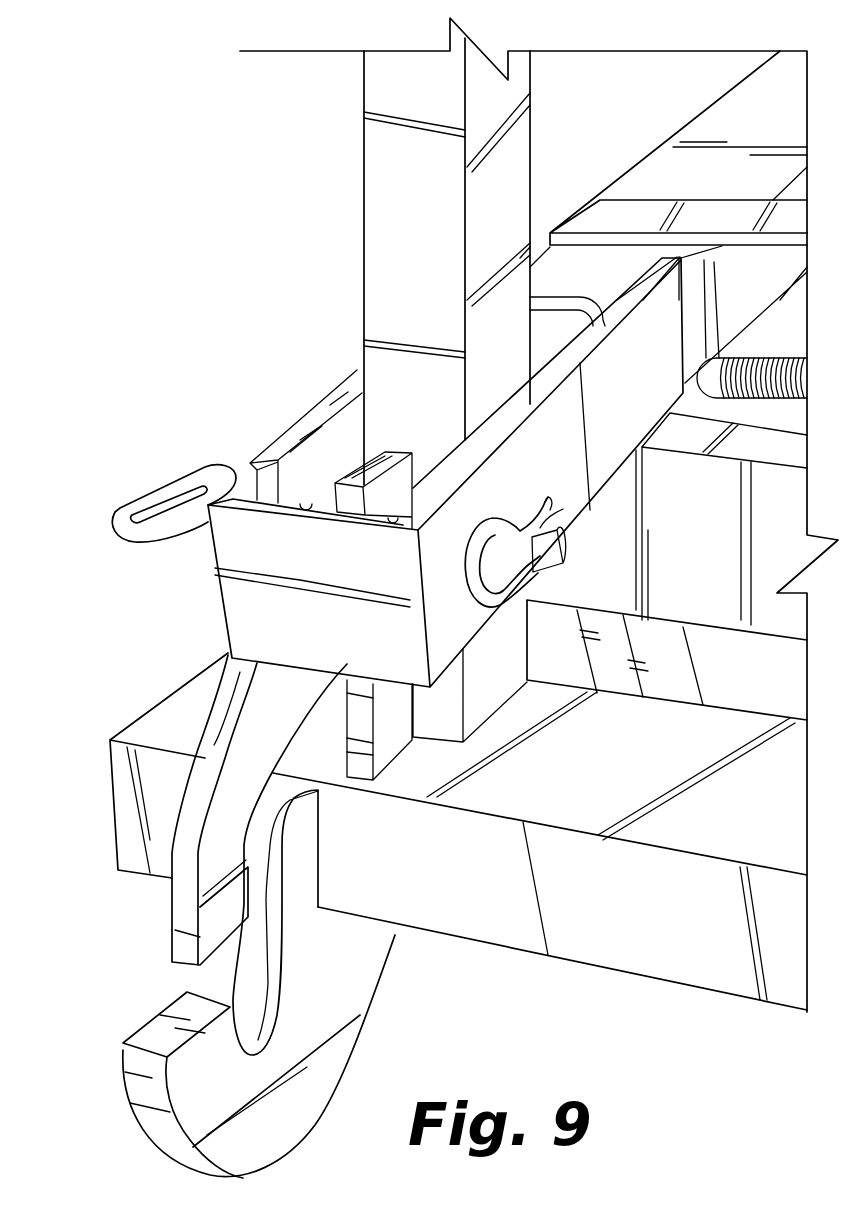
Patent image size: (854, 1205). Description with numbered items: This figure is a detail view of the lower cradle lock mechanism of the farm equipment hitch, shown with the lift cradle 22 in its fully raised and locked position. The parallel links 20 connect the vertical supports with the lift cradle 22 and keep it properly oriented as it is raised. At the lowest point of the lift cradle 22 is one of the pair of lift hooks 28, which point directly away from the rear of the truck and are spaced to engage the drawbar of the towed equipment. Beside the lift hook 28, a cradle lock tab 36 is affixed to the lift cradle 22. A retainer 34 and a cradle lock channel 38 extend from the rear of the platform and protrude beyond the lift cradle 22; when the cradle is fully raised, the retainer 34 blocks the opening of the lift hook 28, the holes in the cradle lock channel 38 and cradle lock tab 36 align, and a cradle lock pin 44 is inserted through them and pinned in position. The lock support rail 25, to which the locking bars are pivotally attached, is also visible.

The parallel links 20 is at (737, 117).
The lift cradle 22 is at (392, 200).
The lock support rail 25 is at (780, 610).
The lift hooks 28 is at (132, 1076).
The retainers 34 is at (176, 905).
The cradle lock tabs 36 is at (360, 473).
The cradle lock channels 38 is at (258, 443).
The cradle lock pins 44 is at (110, 522).